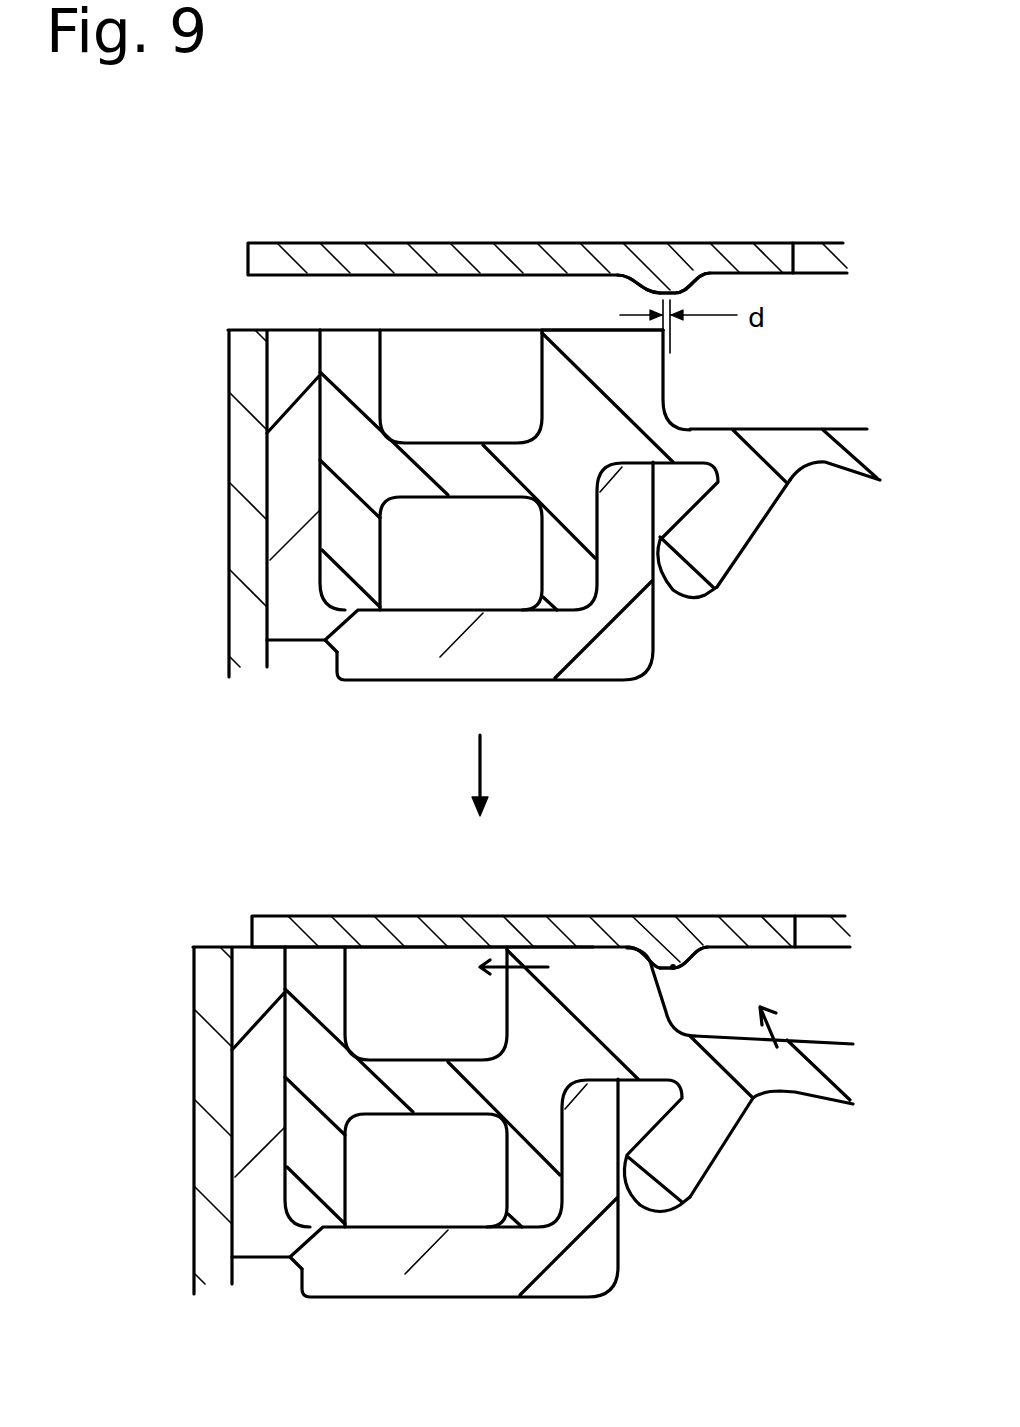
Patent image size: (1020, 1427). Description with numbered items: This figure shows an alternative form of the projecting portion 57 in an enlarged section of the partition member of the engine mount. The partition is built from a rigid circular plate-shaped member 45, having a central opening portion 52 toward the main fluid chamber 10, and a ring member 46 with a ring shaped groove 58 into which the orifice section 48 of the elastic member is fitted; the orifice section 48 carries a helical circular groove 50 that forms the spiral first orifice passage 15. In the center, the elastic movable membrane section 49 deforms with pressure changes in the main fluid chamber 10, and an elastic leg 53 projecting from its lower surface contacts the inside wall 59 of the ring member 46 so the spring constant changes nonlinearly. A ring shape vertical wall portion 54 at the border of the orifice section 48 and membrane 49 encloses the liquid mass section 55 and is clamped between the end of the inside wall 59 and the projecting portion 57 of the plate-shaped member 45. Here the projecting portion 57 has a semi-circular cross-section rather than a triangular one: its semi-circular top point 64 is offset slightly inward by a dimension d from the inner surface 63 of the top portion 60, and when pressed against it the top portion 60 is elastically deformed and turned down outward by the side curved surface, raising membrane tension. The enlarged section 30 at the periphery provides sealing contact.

The main fluid chamber 10 is at (774, 170).
The first orifice passage 15 is at (486, 386).
The enlarged section 30 is at (595, 333).
The circular plate-shaped member 45 is at (402, 260).
The ring member 46 is at (285, 370).
The orifice section 48 is at (337, 345).
The elastic movable membrane section 49 is at (833, 457).
The helical circular groove 50 is at (383, 383).
The opening portion 52 is at (828, 262).
The elastic leg 53 is at (737, 530).
The ring shape vertical wall portion 54 is at (637, 378).
The liquid mass section 55 is at (833, 373).
The projecting portion 57 is at (625, 283).
The ring shaped groove 58 is at (322, 565).
The inside wall 59 is at (643, 613).
The top portion 60 is at (533, 933).
The inner surface 63 is at (670, 335).
The semi-circular top point 64 is at (673, 285).